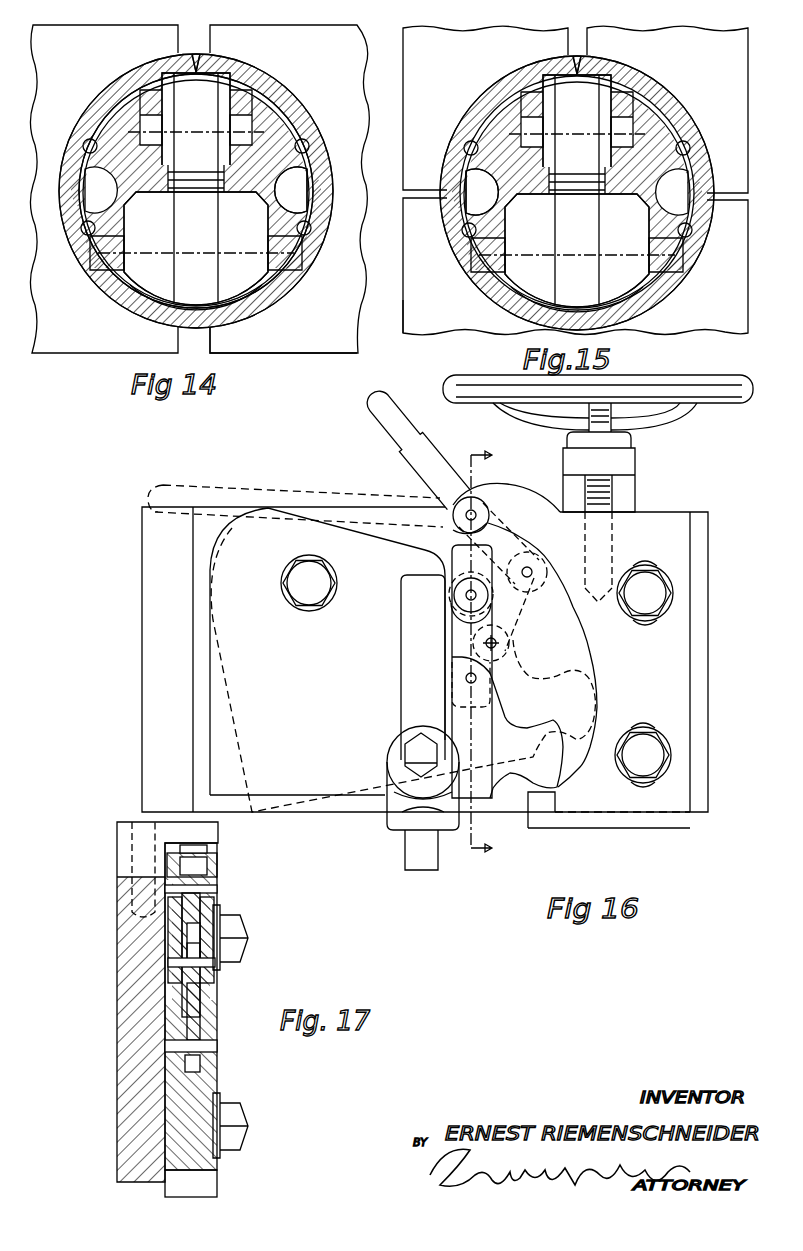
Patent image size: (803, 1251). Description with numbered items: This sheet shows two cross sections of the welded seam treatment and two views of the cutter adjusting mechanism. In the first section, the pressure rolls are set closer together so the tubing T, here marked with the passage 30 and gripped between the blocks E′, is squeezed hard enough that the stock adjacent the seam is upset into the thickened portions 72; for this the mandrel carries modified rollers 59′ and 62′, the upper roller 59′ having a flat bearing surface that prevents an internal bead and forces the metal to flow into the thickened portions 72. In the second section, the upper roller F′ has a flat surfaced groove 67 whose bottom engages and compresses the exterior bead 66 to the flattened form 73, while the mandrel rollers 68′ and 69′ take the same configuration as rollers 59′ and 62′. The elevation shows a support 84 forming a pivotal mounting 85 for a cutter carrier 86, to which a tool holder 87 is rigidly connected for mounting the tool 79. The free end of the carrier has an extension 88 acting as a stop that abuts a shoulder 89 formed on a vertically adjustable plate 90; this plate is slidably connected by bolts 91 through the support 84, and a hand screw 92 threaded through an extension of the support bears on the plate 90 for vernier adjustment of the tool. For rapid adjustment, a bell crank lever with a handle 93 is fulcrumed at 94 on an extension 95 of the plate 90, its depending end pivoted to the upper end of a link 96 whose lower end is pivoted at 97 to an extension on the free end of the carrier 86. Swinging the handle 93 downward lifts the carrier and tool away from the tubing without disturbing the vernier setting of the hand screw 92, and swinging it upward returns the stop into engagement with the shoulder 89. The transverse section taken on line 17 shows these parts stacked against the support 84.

In FIG. 14, the upper roller 59′ is at (187, 127).
In FIG. 14, the exterior bead 66 is at (198, 53).
In FIG. 14, the upset or thickened portions 72 is at (206, 64).
In FIG. 14, the tube T is at (90, 117).
In FIG. 14, the passage 30 is at (288, 193).
In FIG. 15, the passage 30 is at (487, 189).
In FIG. 14, the lower roller 62′ is at (160, 288).
In FIG. 14, the block E′ is at (325, 341).
In FIG. 15, the flat surfaced groove 67 is at (566, 45).
In FIG. 15, the flattened bead 73 is at (579, 64).
In FIG. 15, the roller 68′ is at (582, 109).
In FIG. 15, the upper roller F′ is at (410, 300).
In FIG. 15, the roller 69′ is at (658, 303).
In FIG. 16, the tool 79 is at (425, 862).
In FIG. 16, the support 84 is at (200, 523).
In FIG. 17, the support 84 is at (122, 987).
In FIG. 16, the pivotal mounting 85 is at (311, 580).
In FIG. 16, the cutter carrier 86 is at (308, 777).
In FIG. 17, the cutter carrier 86 is at (203, 1083).
In FIG. 16, the tool holder 87 is at (403, 702).
In FIG. 16, the extension 88 is at (553, 771).
In FIG. 16, the shoulder 89 is at (542, 796).
In FIG. 16, the adjustable plate 90 is at (677, 667).
In FIG. 16, the bolts 91 is at (651, 596).
In FIG. 17, the bolts 91 is at (238, 952).
In FIG. 16, the hand screw 92 is at (667, 422).
In FIG. 17, the hand screw 92 is at (147, 853).
In FIG. 16, the handle 93 is at (420, 455).
In FIG. 17, the handle 93 is at (200, 913).
In FIG. 16, the fulcrum 94 is at (475, 513).
In FIG. 17, the fulcrum 94 is at (215, 888).
In FIG. 16, the extension 95 is at (532, 512).
In FIG. 16, the link 96 is at (492, 643).
In FIG. 17, the link 96 is at (202, 1013).
In FIG. 16, the pivotal connection 97 is at (477, 682).
In FIG. 17, the pivotal connection 97 is at (210, 1047).
In FIG. 16, the section line 17 is at (495, 653).